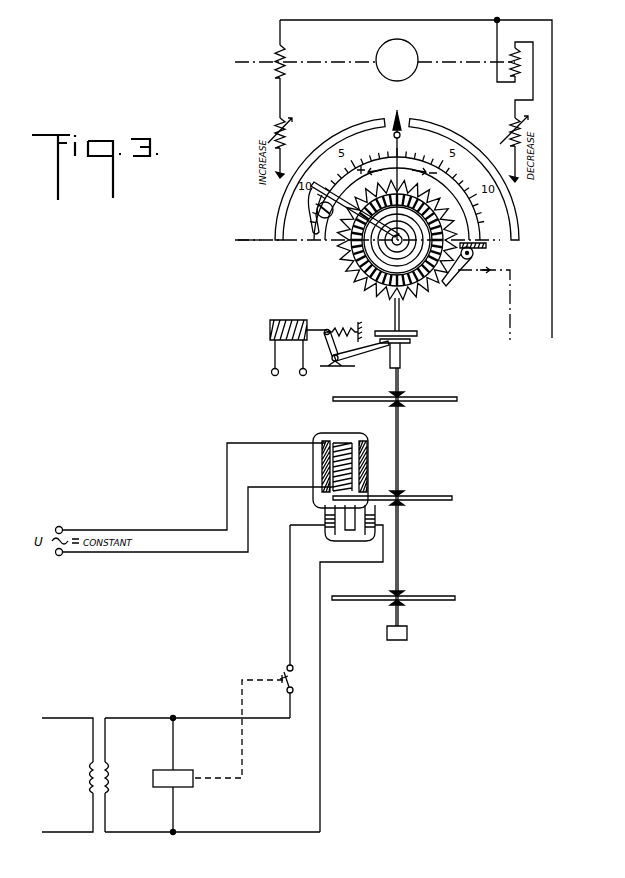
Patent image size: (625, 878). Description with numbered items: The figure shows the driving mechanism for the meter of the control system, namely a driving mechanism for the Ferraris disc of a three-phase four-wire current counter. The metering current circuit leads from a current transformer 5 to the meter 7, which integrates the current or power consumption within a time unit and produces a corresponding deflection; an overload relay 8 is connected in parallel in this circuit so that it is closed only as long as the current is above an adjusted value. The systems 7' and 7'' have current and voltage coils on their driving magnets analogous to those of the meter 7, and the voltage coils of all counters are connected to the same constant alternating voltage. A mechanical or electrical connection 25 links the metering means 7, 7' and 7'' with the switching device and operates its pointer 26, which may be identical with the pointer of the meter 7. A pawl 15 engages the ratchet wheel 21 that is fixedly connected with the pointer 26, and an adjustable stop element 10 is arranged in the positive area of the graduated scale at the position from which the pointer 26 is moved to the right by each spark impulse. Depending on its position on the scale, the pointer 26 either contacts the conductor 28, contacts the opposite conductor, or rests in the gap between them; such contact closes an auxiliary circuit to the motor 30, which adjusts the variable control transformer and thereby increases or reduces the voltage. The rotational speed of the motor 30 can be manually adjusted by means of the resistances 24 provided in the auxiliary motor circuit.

The motor 30 is at (416, 50).
The resistances 24 is at (272, 125).
The conductor 28 is at (371, 128).
The mechanical or electrical connection 25 is at (258, 242).
The pointer 26 is at (400, 176).
The ratchet wheel 21 is at (352, 278).
The lever arm 10 is at (349, 209).
The pawl 15 is at (452, 282).
The meter system 7' is at (408, 395).
The meter 7 is at (408, 495).
The meter system 7'' is at (411, 594).
The current transformer 5 is at (88, 776).
The overload relay 8 is at (153, 772).